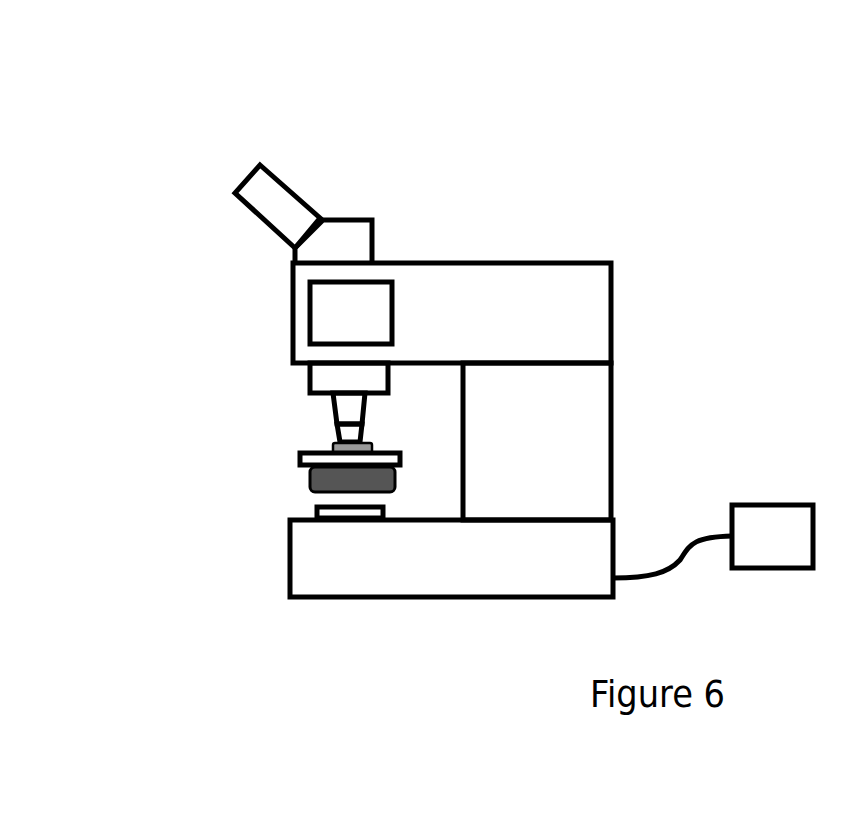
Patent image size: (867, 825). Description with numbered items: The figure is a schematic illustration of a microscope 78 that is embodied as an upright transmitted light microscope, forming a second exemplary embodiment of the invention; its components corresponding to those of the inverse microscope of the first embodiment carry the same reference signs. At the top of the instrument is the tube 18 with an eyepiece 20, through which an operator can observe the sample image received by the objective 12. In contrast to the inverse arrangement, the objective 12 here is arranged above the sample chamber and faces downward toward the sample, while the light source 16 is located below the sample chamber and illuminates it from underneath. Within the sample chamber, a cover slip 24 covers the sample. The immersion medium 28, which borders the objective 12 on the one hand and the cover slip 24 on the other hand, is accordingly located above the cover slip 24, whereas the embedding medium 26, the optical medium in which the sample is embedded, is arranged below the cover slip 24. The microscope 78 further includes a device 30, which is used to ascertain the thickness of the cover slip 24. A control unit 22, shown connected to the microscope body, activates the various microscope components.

The microscope 78 is at (222, 124).
The tube 18 is at (291, 256).
The eyepiece 20 is at (305, 195).
The device 30 is at (351, 313).
The objective 12 is at (338, 416).
The immersion medium 28 is at (328, 443).
The cover slip 24 is at (298, 459).
The embedding medium 26 is at (308, 490).
The light source 16 is at (378, 516).
The control unit 22 is at (713, 541).